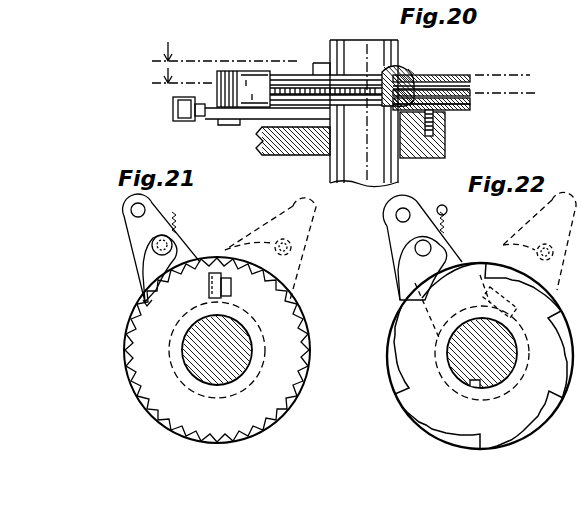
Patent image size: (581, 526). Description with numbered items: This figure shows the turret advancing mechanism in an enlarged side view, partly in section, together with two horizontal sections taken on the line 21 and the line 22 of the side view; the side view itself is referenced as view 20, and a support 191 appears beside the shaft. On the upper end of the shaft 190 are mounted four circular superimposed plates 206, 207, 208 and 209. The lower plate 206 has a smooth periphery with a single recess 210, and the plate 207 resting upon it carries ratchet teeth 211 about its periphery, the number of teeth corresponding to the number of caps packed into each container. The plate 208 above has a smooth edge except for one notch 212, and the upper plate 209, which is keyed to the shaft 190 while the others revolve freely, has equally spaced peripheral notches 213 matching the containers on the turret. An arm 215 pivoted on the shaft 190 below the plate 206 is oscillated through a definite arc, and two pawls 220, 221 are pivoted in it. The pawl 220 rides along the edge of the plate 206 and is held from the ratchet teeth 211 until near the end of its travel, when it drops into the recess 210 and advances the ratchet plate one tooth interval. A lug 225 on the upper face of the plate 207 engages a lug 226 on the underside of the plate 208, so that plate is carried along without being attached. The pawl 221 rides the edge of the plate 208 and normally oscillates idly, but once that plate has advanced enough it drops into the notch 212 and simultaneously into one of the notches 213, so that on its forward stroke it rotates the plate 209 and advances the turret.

In FIG. 20, the fig 20 section indicator 20 is at (226, 0).
In FIG. 20, the section line 21— 21 is at (333, 85).
In FIG. 20, the section line 22— 22 is at (330, 63).
In FIG. 20, the shaft 190 is at (352, 40).
In FIG. 21, the shaft 190 is at (230, 362).
In FIG. 22, the shaft 190 is at (450, 355).
In FIG. 20, the support block 191 is at (262, 140).
In FIG. 20, the lower plate 206 is at (460, 111).
In FIG. 21, the lower plate 206 is at (134, 372).
In FIG. 20, the ratchet plate 207 is at (458, 101).
In FIG. 21, the ratchet plate 207 is at (150, 341).
In FIG. 20, the notched plate 208 is at (460, 78).
In FIG. 22, the notched plate 208 is at (420, 331).
In FIG. 20, the upper plate 209 is at (410, 78).
In FIG. 22, the upper plate 209 is at (420, 368).
In FIG. 21, the recess 210 is at (141, 310).
In FIG. 21, the ratchet teeth 211 is at (140, 394).
In FIG. 22, the notch 212 is at (520, 256).
In FIG. 22, the peripheral notches 213 is at (405, 393).
In FIG. 20, the arm 215 is at (213, 116).
In FIG. 21, the arm 215 is at (128, 232).
In FIG. 22, the arm 215 is at (402, 240).
In FIG. 20, the pawl 220 is at (286, 84).
In FIG. 21, the pawl 220 is at (142, 270).
In FIG. 20, the pawl 221 is at (250, 78).
In FIG. 22, the pawl 221 is at (406, 284).
In FIG. 21, the lug 225 is at (234, 300).
In FIG. 21, the lug 226 is at (208, 300).